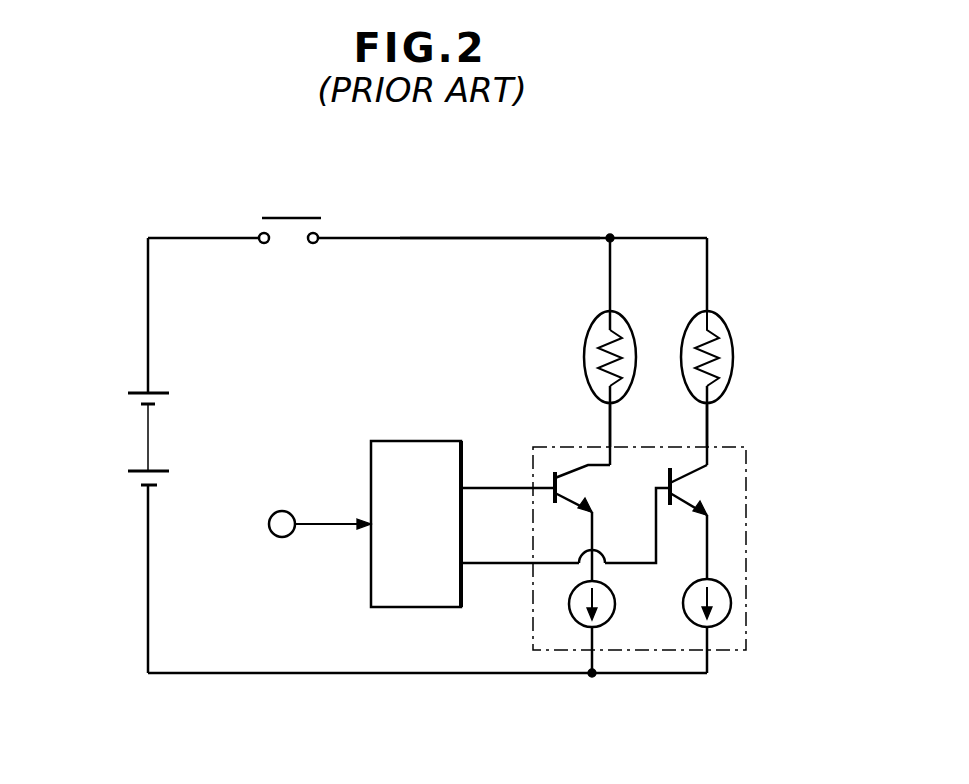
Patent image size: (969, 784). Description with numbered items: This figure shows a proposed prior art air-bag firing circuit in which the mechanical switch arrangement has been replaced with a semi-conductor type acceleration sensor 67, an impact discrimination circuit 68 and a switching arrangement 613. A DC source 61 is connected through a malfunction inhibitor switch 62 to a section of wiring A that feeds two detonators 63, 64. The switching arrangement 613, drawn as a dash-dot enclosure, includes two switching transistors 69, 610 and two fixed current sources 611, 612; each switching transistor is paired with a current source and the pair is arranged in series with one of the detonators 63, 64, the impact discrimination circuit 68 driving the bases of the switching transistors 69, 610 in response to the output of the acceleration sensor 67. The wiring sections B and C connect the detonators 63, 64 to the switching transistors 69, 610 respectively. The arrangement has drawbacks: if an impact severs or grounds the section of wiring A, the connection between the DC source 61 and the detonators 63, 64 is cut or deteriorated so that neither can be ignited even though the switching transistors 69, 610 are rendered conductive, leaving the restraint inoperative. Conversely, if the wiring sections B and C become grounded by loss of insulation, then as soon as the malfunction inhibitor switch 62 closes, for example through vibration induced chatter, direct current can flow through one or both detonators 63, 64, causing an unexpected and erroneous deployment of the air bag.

The DC source 61 is at (142, 435).
The malfunction inhibitor switch 62 is at (291, 212).
The detonator 63 is at (637, 340).
The detonator 64 is at (735, 360).
The semi-conductor type acceleration sensor 67 is at (283, 510).
The impact discrimination circuit 68 is at (390, 441).
The switching transistor 69 is at (557, 455).
The switching transistor 610 is at (693, 487).
The fixed current source 611 is at (575, 606).
The fixed current source 612 is at (727, 605).
The switching arrangement 613 is at (522, 452).
The section of wiring A is at (516, 238).
The section of wiring B is at (613, 435).
The section of wiring C is at (709, 432).